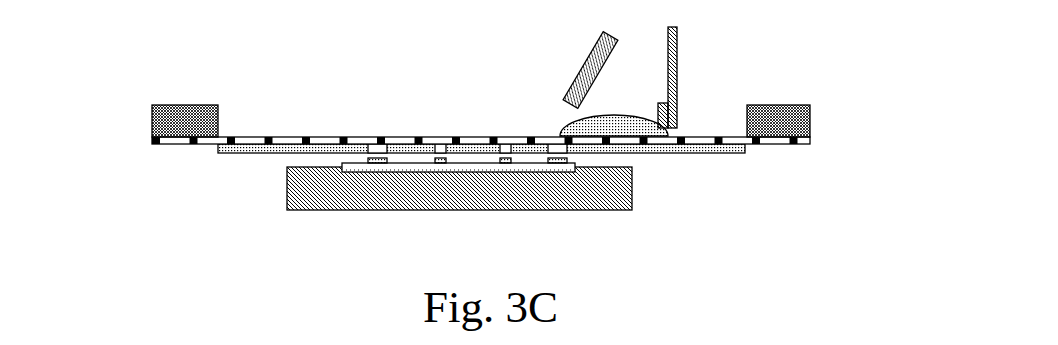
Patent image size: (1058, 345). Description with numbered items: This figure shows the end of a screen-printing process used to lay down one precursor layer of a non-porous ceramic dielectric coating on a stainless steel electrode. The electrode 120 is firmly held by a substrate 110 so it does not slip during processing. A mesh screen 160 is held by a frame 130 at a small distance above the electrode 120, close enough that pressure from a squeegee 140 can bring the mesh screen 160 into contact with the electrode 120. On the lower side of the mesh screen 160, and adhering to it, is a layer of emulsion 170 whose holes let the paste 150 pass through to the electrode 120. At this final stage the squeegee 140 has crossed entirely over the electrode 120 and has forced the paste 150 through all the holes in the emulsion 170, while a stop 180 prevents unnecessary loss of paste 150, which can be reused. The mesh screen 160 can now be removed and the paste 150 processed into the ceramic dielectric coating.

The substrate 110 is at (284, 191).
The electrode 120 is at (339, 163).
The frame 130 is at (131, 112).
The squeegee 140 is at (581, 67).
The paste 150 is at (626, 112).
The mesh screen 160 is at (725, 134).
The emulsion 170 is at (699, 156).
The stop 180 is at (681, 70).